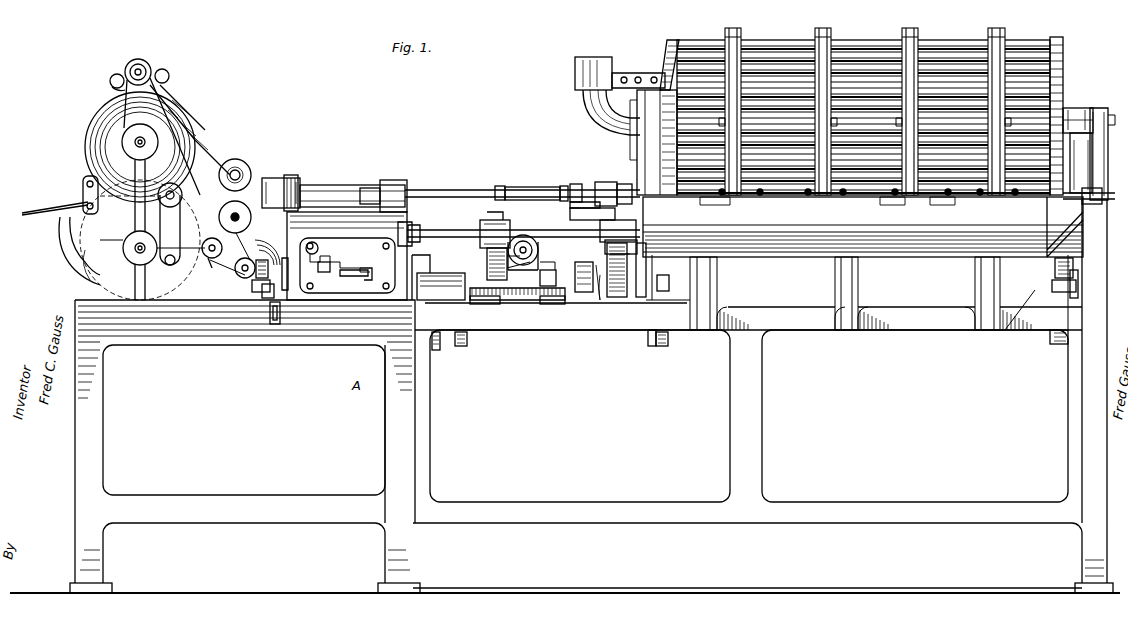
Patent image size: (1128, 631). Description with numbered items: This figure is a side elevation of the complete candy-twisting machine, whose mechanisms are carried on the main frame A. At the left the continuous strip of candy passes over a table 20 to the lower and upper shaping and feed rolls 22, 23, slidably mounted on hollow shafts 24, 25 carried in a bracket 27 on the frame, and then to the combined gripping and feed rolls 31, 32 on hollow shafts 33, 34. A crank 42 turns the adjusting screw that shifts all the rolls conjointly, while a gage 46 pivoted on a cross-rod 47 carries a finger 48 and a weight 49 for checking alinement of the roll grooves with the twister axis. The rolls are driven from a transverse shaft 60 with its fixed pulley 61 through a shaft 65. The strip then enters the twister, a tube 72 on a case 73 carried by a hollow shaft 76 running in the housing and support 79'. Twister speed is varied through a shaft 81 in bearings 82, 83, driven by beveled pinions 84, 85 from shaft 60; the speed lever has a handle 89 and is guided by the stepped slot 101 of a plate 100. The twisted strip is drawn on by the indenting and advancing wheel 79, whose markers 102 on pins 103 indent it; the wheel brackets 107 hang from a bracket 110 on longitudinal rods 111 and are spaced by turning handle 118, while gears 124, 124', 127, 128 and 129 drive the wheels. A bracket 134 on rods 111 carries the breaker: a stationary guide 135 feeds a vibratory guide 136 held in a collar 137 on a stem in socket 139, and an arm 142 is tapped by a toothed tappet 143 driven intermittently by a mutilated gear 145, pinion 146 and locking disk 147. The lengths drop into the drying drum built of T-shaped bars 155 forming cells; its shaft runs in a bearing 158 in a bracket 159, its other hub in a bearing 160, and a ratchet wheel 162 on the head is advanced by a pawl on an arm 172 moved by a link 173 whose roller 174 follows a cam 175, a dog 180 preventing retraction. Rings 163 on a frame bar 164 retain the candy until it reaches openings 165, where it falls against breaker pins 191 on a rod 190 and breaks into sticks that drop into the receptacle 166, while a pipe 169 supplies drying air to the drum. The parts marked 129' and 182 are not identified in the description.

The table 20 is at (32, 204).
The lower shaping and feed roll 22 is at (86, 262).
The upper shaping and feed roll 23 is at (88, 135).
The hollow shaft 24 is at (138, 249).
The hollow shaft 25 is at (135, 143).
The bracket 27 is at (205, 157).
The combined gripping and feed roll 31 is at (252, 217).
The combined gripping and feed roll 32 is at (245, 165).
The hollow shaft 33 is at (213, 228).
The hollow shaft 34 is at (240, 170).
The crank 42 is at (170, 266).
The gage 46 is at (110, 77).
The cross-rod 47 is at (148, 62).
The finger 48 is at (113, 88).
The weight 49 is at (169, 74).
The transverse shaft 60 is at (242, 278).
The fixed pulley 61 is at (240, 243).
The shaft 65 is at (210, 258).
The tube 72 is at (283, 190).
The case 73 is at (294, 176).
The hollow shaft 76 is at (420, 190).
The combined indenting and advancing wheel 79 is at (532, 183).
The housing and support 79' is at (353, 185).
The shaft 81 is at (368, 282).
The bearing 82 is at (420, 300).
The bearing 83 is at (280, 292).
The beveled pinion 84 is at (268, 296).
The beveled pinion 85 is at (245, 280).
The handle 89 is at (322, 270).
The plate 100 is at (355, 230).
The stepped slot 101 is at (348, 278).
The markers 102 is at (500, 186).
The pins 103 is at (563, 186).
The brackets 107 is at (540, 252).
The bracket 110 is at (487, 262).
The rods 111 is at (435, 218).
The handle 118 is at (480, 222).
The gear 124 is at (477, 343).
The gear-wheel 124' is at (448, 353).
The beveled pinion 127 is at (500, 300).
The gear 128 is at (478, 304).
The gear 129 is at (555, 314).
The arm 129' is at (563, 267).
The supporting bracket 134 is at (632, 254).
The stationary guide 135 is at (576, 184).
The vibratory guide 136 is at (623, 184).
The collar 137 is at (600, 180).
The socket 139 is at (634, 213).
The arm 142 is at (557, 280).
The tappet wheel 143 is at (603, 300).
The mutilated gear-wheel 145 is at (668, 338).
The pinion 146 is at (669, 286).
The disk 147 is at (652, 346).
The bars 155 is at (855, 55).
The bearing 158 is at (1098, 112).
The bracket 159 is at (1090, 163).
The bearing 160 is at (640, 130).
The ratchet wheel 162 is at (1063, 62).
The rings 163 is at (968, 28).
The frame bar 164 is at (1054, 228).
The openings 165 is at (830, 196).
The receptacle 166 is at (863, 227).
The pipe 169 is at (582, 102).
The arm 172 is at (1080, 108).
The link 173 is at (1050, 318).
The roller 174 is at (1062, 258).
The cam 175 is at (1056, 288).
The dog 180 is at (1045, 196).
The chute 182 is at (660, 60).
The rod 190 is at (705, 196).
The breaker pins 191 is at (940, 200).